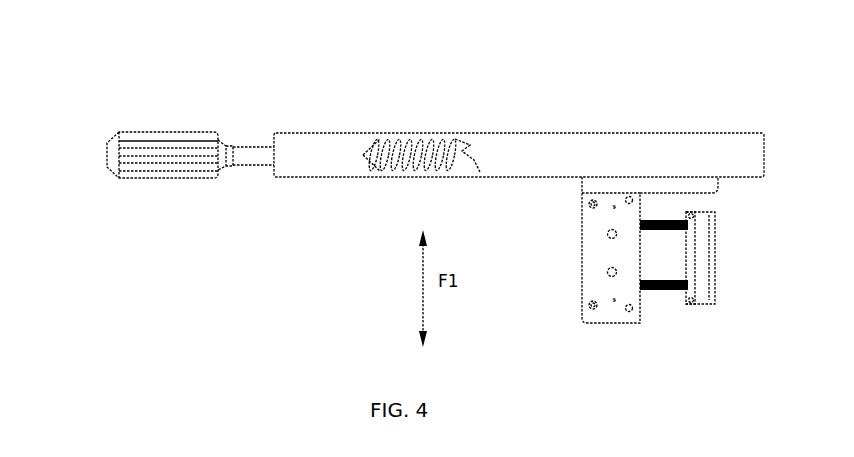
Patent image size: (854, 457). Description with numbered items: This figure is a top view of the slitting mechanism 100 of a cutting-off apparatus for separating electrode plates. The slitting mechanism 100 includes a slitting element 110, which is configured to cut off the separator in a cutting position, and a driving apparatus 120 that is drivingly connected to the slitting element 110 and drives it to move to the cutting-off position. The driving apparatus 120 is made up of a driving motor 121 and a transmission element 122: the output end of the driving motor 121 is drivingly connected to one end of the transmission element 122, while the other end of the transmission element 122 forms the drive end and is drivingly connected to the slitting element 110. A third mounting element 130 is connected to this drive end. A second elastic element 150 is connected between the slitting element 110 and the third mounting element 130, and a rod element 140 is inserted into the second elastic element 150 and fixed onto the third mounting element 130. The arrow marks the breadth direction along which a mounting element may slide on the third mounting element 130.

The slitting mechanism 100 is at (88, 68).
The driving apparatus 120 is at (275, 62).
The driving motor 121 is at (182, 133).
The transmission element 122 is at (285, 133).
The third mounting element 130 is at (580, 322).
The rod element 140 is at (638, 284).
The second elastic element 150 is at (684, 292).
The slitting element 110 is at (707, 292).